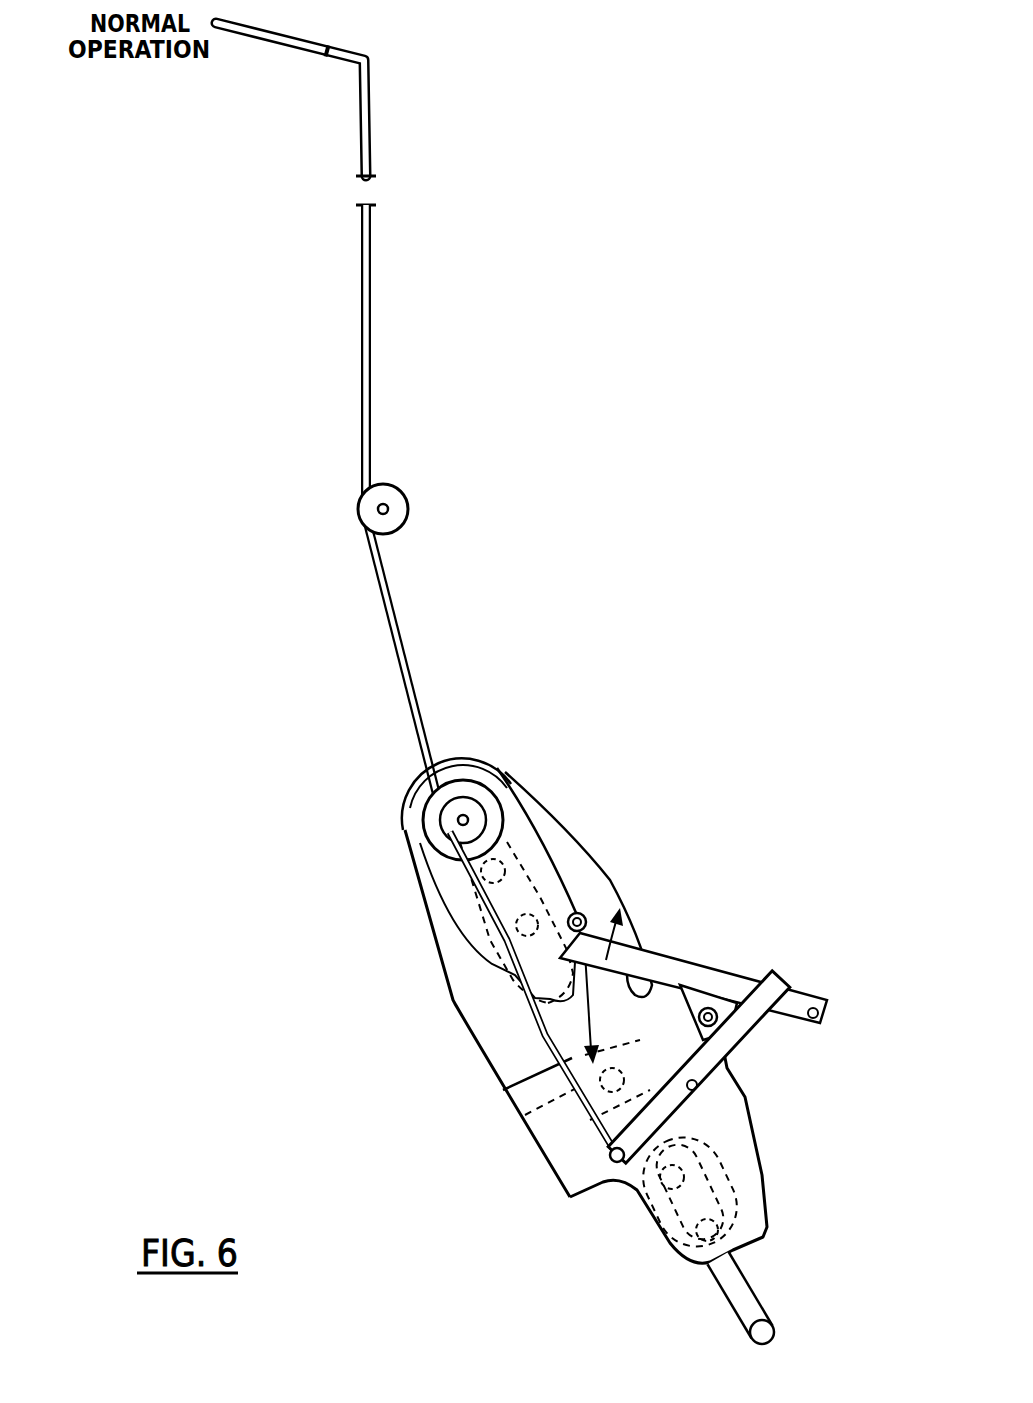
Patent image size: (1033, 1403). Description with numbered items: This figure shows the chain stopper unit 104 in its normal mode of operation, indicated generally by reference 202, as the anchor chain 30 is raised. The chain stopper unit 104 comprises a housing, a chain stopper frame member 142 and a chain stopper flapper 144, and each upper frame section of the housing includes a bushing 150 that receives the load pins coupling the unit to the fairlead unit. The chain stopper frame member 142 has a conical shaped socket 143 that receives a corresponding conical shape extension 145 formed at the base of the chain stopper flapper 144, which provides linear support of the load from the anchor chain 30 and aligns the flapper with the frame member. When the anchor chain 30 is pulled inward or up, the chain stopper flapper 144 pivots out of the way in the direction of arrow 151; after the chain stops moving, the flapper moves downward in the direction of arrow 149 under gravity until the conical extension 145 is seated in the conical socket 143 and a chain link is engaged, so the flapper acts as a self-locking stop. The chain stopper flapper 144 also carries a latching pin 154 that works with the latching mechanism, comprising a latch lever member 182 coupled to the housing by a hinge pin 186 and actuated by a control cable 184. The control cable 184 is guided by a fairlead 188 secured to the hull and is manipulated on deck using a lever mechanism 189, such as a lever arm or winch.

The anchor chain 30 is at (752, 1290).
The chain stopper unit 104 is at (572, 782).
The chain stopper frame member 142 is at (503, 1088).
The conical shaped socket 143 is at (530, 1120).
The chain stopper flapper 144 is at (710, 968).
The conical shape extension 145 is at (680, 982).
The arrow indicating downward flapper movement 149 is at (553, 1022).
The bushing 150 is at (488, 788).
The arrow indicating upward flapper movement 151 is at (605, 950).
The latching pin 154 is at (813, 1022).
The latch lever member 182 is at (738, 1036).
The control cable 184 is at (403, 702).
The hinge pin 186 is at (698, 1090).
The fairlead 188 is at (407, 504).
The lever mechanism 189 is at (310, 38).
The normal operation position 202 is at (526, 1019).